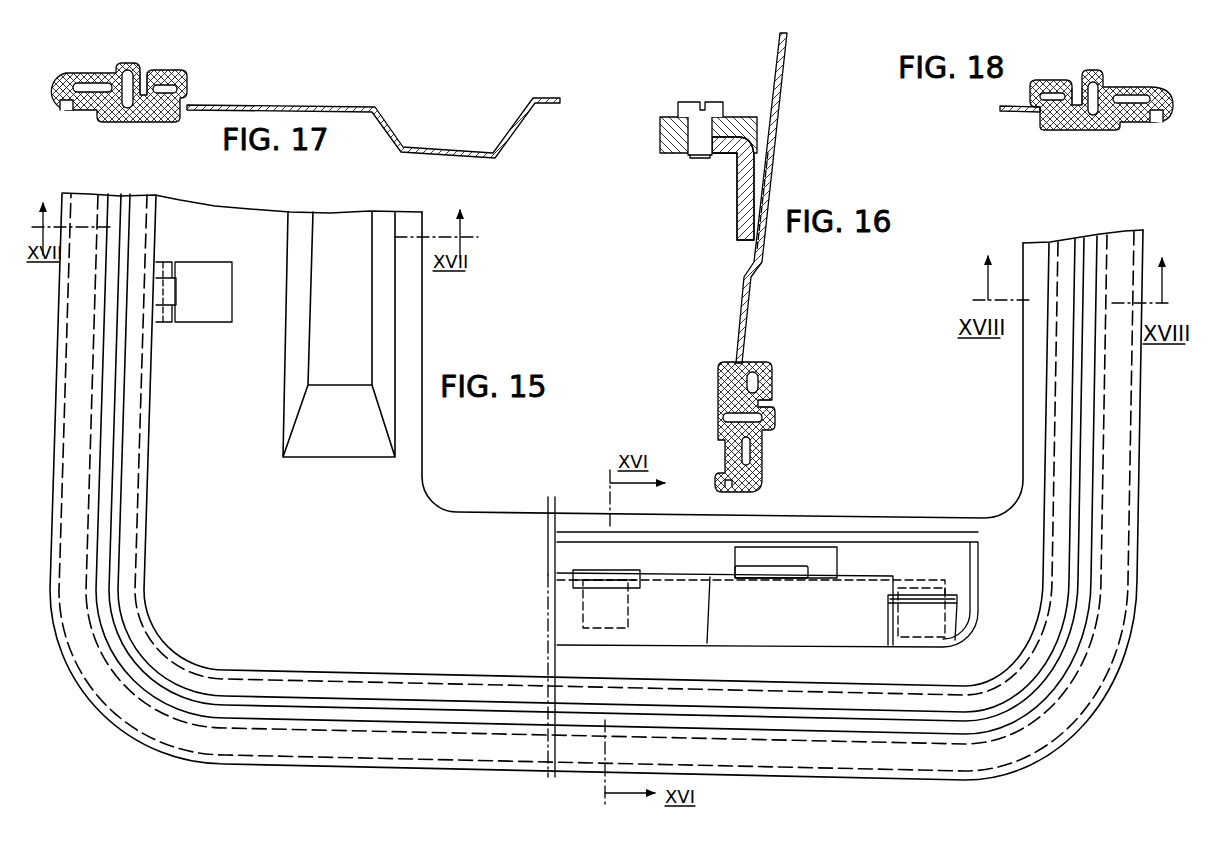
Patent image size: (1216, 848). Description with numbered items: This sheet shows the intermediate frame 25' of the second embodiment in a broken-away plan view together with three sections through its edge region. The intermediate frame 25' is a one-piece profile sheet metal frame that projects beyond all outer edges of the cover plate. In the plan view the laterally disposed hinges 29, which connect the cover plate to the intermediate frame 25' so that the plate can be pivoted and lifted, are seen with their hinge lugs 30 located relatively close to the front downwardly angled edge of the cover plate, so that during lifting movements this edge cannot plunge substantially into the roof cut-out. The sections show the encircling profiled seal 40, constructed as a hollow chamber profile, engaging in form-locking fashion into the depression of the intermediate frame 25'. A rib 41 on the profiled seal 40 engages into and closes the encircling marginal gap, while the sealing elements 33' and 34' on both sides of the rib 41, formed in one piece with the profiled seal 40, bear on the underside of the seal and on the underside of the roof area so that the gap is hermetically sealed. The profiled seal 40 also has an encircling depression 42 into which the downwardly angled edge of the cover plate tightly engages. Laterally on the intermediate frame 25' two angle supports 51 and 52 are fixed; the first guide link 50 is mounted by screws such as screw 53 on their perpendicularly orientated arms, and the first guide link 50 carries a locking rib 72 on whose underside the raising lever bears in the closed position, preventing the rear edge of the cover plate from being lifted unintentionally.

In FIG. 15, the intermediate frame 25' is at (596, 486).
In FIG. 17, the intermediate frame 25' is at (373, 106).
In FIG. 18, the intermediate frame 25' is at (1015, 139).
In FIG. 16, the intermediate frame 25' is at (786, 198).
In FIG. 15, the hinge 29 is at (214, 272).
In FIG. 15, the hinge lug 30 is at (166, 265).
In FIG. 17, the sealing element 33' is at (190, 59).
In FIG. 18, the sealing element 33' is at (1038, 69).
In FIG. 16, the sealing element 33' is at (789, 368).
In FIG. 17, the sealing element 34' is at (83, 68).
In FIG. 18, the sealing element 34' is at (1148, 80).
In FIG. 16, the sealing element 34' is at (772, 462).
In FIG. 17, the profiled seal 40 is at (135, 120).
In FIG. 18, the profiled seal 40 is at (1103, 130).
In FIG. 16, the profiled seal 40 is at (720, 392).
In FIG. 17, the rib 41 is at (124, 64).
In FIG. 18, the rib 41 is at (1100, 70).
In FIG. 16, the rib 41 is at (775, 418).
In FIG. 17, the encircling depression 42 is at (143, 70).
In FIG. 18, the encircling depression 42 is at (1077, 92).
In FIG. 16, the encircling depression 42 is at (766, 404).
In FIG. 16, the first guide link 50 is at (660, 123).
In FIG. 15, the angle support 51 is at (632, 604).
In FIG. 16, the angle support 51 is at (745, 192).
In FIG. 15, the angle support 52 is at (942, 640).
In FIG. 16, the screw 53 is at (719, 102).
In FIG. 15, the locking rib 72 is at (792, 572).